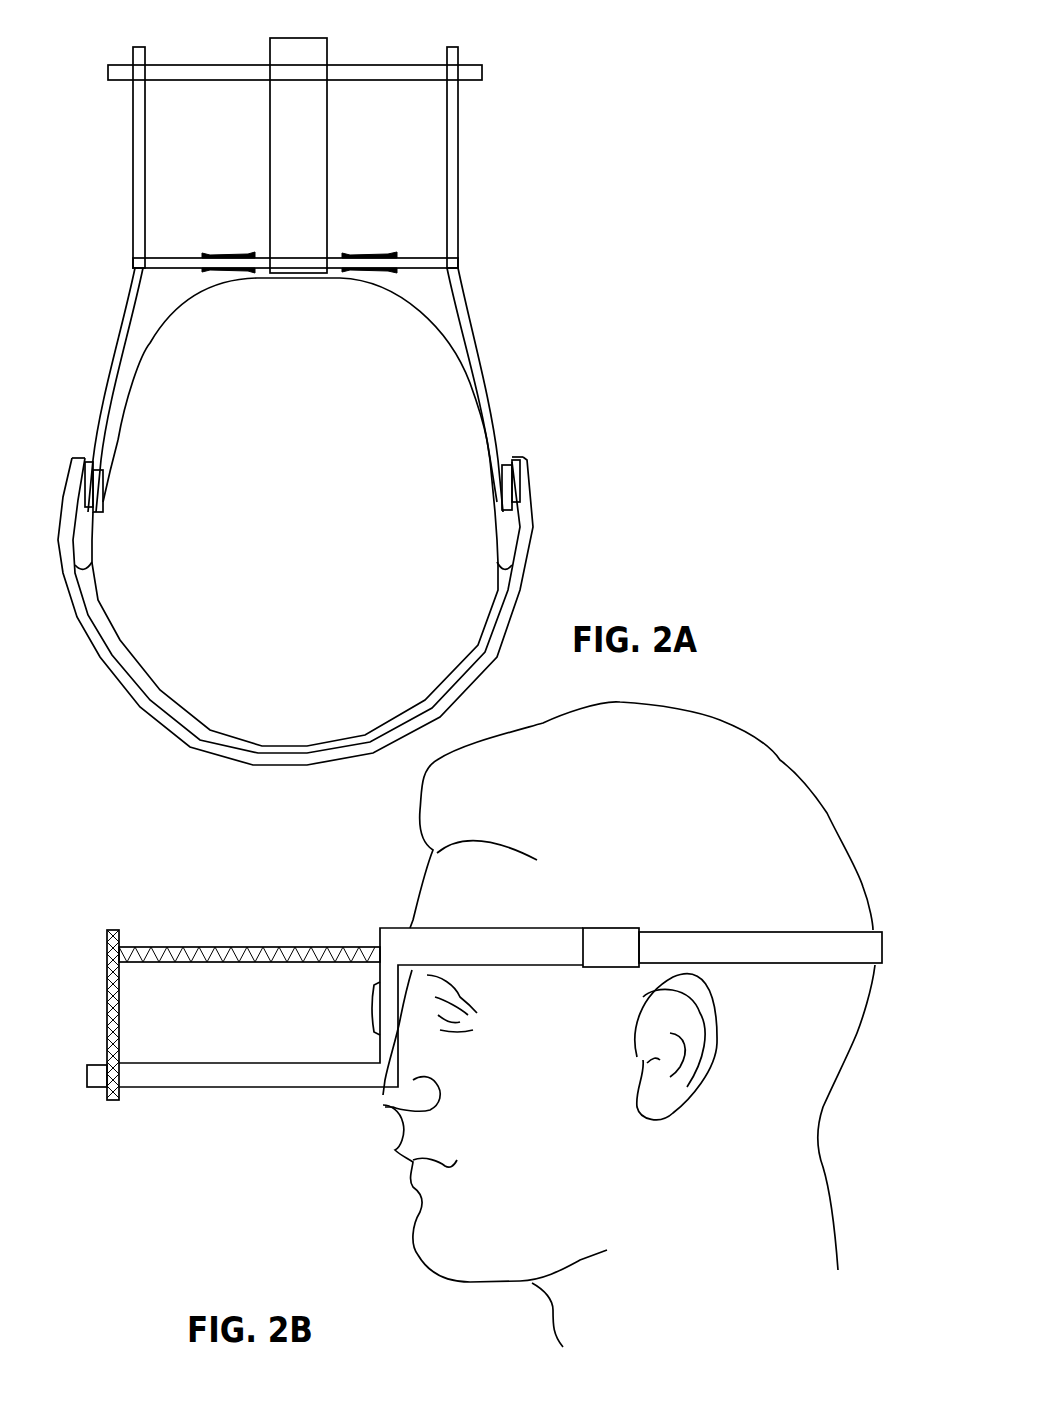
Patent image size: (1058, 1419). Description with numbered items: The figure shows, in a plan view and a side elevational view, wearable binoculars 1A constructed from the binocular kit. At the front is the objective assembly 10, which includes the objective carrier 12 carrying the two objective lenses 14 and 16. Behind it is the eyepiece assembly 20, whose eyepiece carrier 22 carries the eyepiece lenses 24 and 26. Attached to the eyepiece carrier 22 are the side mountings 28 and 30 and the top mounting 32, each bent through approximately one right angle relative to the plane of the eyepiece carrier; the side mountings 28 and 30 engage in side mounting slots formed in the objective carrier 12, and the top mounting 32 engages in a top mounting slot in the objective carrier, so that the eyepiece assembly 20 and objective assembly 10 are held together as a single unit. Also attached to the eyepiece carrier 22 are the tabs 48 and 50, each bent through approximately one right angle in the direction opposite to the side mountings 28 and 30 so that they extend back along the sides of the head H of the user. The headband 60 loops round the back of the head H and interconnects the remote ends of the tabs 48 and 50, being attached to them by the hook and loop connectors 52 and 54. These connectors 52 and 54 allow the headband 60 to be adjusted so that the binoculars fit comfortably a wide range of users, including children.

In FIG. 2A, the objective assembly 10 is at (488, 70).
In FIG. 2B, the objective assembly 10 is at (112, 907).
In FIG. 2A, the objective carrier 12 is at (336, 65).
In FIG. 2B, the objective carrier 12 is at (107, 1005).
In FIG. 2A, the objective lens 14 is at (392, 65).
In FIG. 2A, the objective lens 16 is at (230, 65).
In FIG. 2B, the eyepiece assembly 20 is at (339, 919).
In FIG. 2A, the eyepiece carrier 22 is at (427, 257).
In FIG. 2A, the eyepiece lens 24 is at (383, 254).
In FIG. 2A, the eyepiece lens 26 is at (243, 254).
In FIG. 2A, the side mounting 28 is at (132, 125).
In FIG. 2B, the side mounting 28 is at (252, 1088).
In FIG. 2A, the side mounting 30 is at (459, 97).
In FIG. 2A, the top mounting 32 is at (328, 120).
In FIG. 2B, the top mounting 32 is at (210, 947).
In FIG. 2A, the tab 48 is at (121, 343).
In FIG. 2B, the tab 48 is at (465, 928).
In FIG. 2A, the tab 50 is at (468, 320).
In FIG. 2A, the hook and loop connector 52 is at (92, 452).
In FIG. 2B, the hook and loop connector 52 is at (613, 928).
In FIG. 2A, the hook and loop connector 54 is at (503, 455).
In FIG. 2A, the headband 60 is at (514, 622).
In FIG. 2B, the headband 60 is at (763, 927).
In FIG. 2A, the wearable binoculars 1A is at (512, 160).
In FIG. 2B, the wearable binoculars 1A is at (194, 1112).
In FIG. 2B, the head H is at (781, 760).